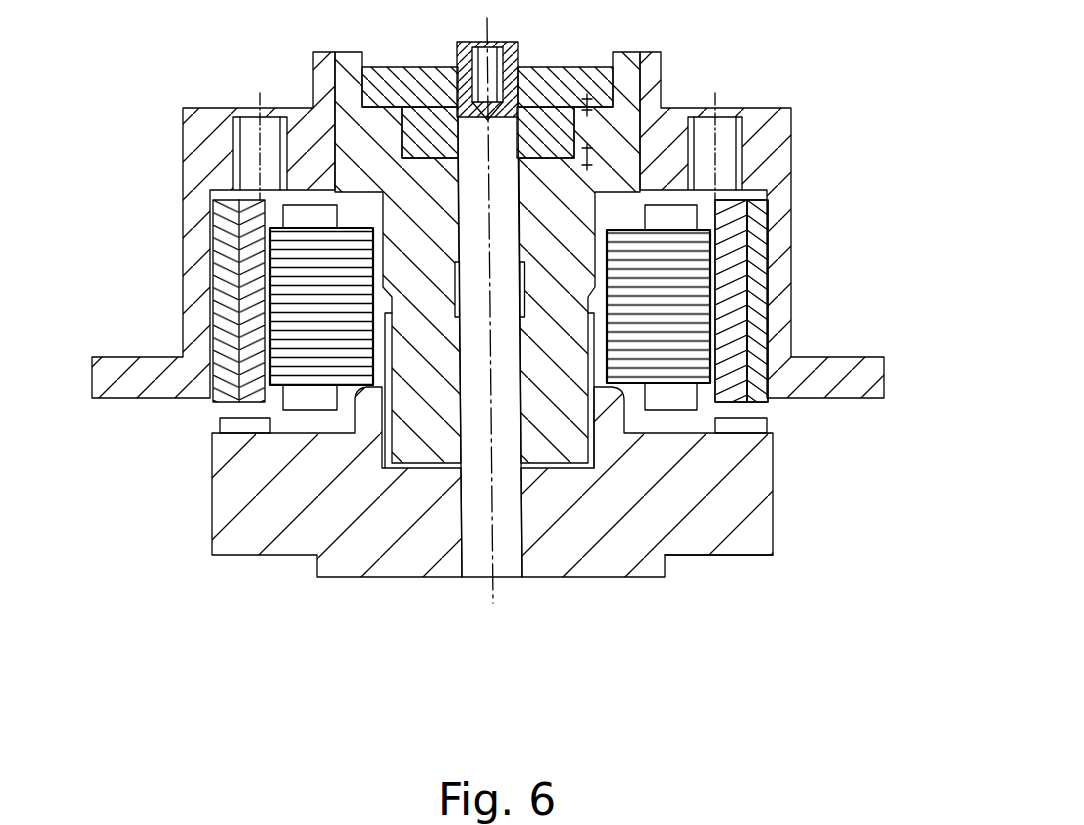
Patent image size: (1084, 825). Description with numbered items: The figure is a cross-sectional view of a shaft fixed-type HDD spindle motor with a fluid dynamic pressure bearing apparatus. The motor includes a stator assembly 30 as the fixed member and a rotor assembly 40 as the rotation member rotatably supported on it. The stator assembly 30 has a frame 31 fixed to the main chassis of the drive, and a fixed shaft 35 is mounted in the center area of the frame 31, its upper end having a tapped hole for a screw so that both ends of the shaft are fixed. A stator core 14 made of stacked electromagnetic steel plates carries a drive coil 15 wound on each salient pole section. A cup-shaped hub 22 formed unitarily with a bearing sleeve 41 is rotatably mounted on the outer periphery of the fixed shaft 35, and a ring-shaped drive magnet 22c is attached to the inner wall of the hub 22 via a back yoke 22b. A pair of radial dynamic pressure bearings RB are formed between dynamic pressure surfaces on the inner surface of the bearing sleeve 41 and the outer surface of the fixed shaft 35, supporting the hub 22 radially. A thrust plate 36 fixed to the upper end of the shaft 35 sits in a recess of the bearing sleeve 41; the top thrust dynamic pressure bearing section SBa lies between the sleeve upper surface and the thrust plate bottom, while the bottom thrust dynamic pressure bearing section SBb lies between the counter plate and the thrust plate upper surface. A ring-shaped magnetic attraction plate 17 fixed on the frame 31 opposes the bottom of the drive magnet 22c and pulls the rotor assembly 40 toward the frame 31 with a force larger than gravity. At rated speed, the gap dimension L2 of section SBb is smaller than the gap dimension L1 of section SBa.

The rotor assembly 40 is at (769, 64).
The cup-shaped hub 22 is at (758, 157).
The back yoke 22b is at (752, 288).
The drive magnet 22c is at (727, 338).
The stator core 14 is at (723, 242).
The drive coil 15 is at (670, 400).
The magnetic attraction plate 17 is at (744, 424).
The stator assembly 30 is at (803, 524).
The frame 31 is at (704, 540).
The fixed shaft 35 is at (478, 563).
The thrust plate 36 is at (425, 130).
The bearing sleeve 41 is at (566, 298).
The radial dynamic pressure bearings RB is at (456, 213).
The top thrust dynamic pressure bearing section SBa is at (548, 162).
The bottom thrust dynamic pressure bearing section SBb is at (543, 107).
The gap dimension of the top thrust dynamic pressure bearing section L1 is at (601, 157).
The gap dimension of the bottom thrust dynamic pressure bearing section L2 is at (597, 96).